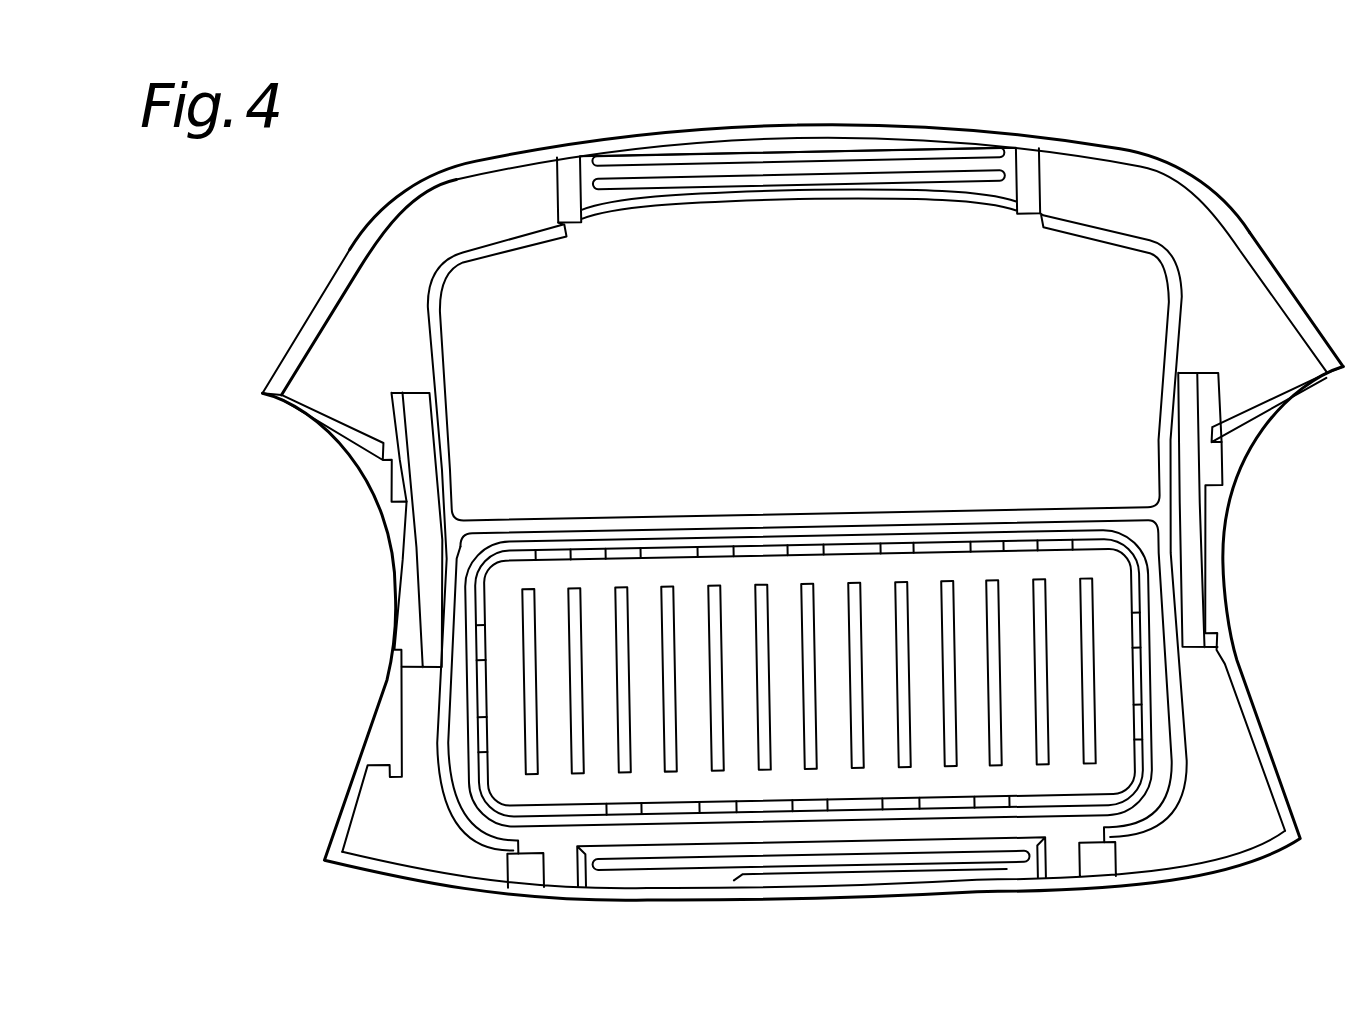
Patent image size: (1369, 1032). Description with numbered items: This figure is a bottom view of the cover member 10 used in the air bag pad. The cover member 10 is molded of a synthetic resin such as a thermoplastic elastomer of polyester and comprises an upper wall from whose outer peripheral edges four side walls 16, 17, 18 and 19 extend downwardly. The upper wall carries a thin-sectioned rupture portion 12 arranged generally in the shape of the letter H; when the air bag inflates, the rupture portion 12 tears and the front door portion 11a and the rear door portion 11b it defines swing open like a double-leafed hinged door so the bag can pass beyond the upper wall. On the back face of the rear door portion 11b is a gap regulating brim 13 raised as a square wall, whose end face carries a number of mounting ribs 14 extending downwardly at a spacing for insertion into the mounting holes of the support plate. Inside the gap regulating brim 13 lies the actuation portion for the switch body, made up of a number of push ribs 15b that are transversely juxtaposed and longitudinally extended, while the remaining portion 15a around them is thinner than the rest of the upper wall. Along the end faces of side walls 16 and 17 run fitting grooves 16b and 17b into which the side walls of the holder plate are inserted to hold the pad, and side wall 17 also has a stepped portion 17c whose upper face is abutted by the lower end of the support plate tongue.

The cover member 10 is at (1231, 151).
The front door portion 11a is at (1108, 248).
The rear door portion 11b is at (1157, 783).
The rupture portion 12 is at (1155, 253).
The gap regulating brim 13 is at (1142, 570).
The mounting ribs 14 is at (1057, 543).
The remaining portion of the actuation portion 15a is at (775, 590).
The push ribs 15b is at (668, 590).
The side wall 16 is at (805, 130).
The fitting groove 16b is at (843, 178).
The side wall 17 is at (905, 885).
The fitting groove 17b is at (708, 863).
The stepped portion 17c is at (641, 878).
The side wall 18 is at (1190, 527).
The side wall 19 is at (423, 548).